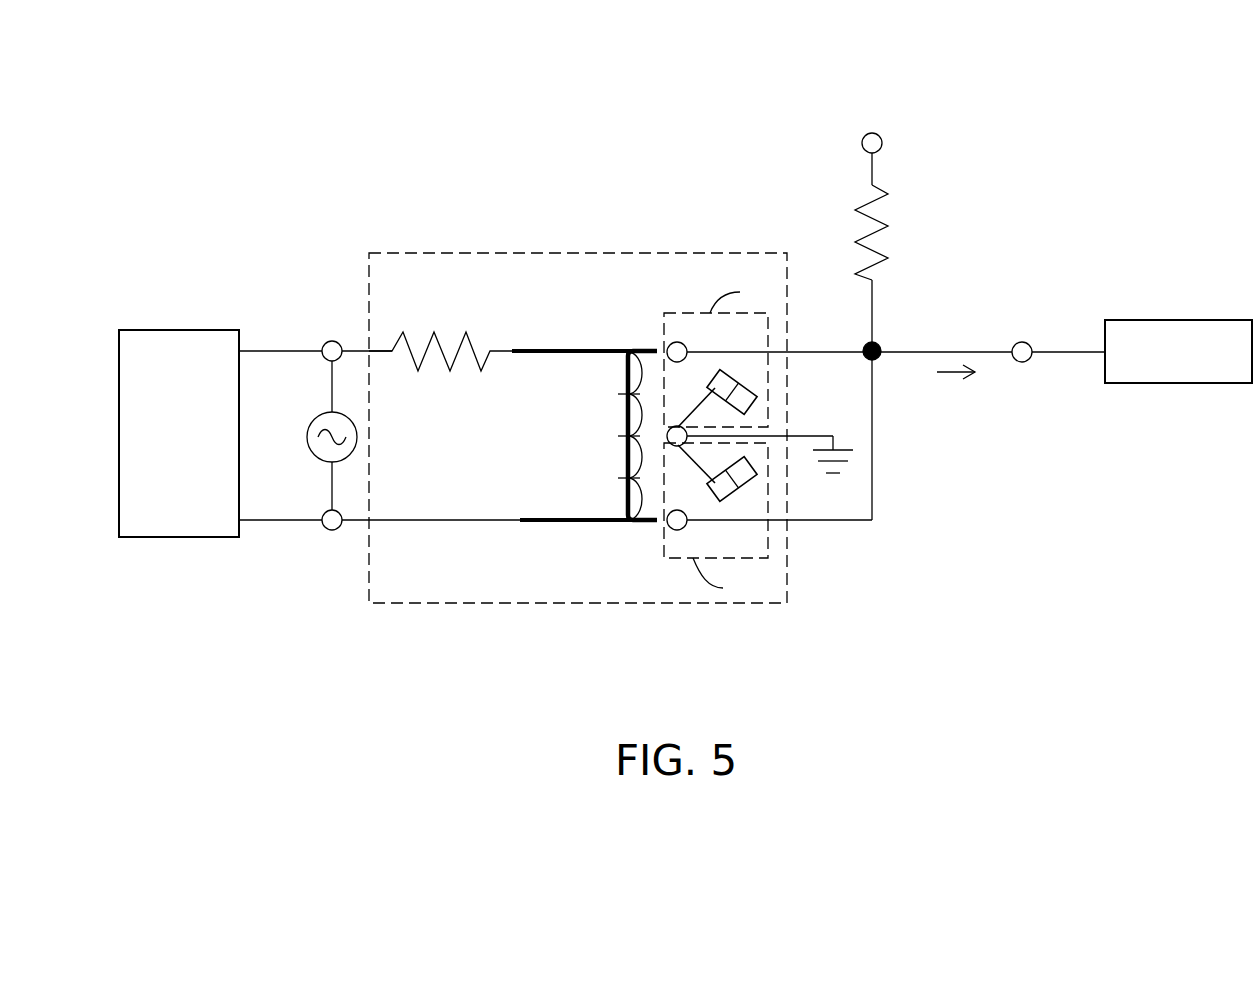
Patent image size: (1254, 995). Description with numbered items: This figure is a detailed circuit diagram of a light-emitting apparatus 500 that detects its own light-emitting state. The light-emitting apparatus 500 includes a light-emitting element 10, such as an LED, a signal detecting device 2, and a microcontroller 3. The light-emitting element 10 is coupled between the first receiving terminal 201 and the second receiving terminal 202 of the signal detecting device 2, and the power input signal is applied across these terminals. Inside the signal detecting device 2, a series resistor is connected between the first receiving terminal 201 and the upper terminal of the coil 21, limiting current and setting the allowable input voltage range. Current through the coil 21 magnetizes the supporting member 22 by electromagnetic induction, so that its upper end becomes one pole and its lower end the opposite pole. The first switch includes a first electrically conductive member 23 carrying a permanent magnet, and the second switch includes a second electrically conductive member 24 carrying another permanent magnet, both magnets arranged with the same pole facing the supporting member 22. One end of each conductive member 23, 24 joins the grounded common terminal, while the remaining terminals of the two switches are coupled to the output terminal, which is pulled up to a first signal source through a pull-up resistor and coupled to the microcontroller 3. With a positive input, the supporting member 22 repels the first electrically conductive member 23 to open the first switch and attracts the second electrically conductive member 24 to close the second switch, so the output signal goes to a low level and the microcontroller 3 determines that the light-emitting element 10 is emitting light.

The light-emitting element 10 is at (147, 330).
The signal detecting device 2 is at (407, 253).
The first receiving terminal 201 is at (319, 335).
The second receiving terminal 202 is at (319, 537).
The coil 21 is at (646, 362).
The supporting member 22 is at (622, 375).
The first electrically conductive member 23 is at (698, 407).
The second electrically conductive member 24 is at (698, 466).
The microcontroller 3 is at (1223, 320).
The light-emitting apparatus 500 is at (1122, 538).